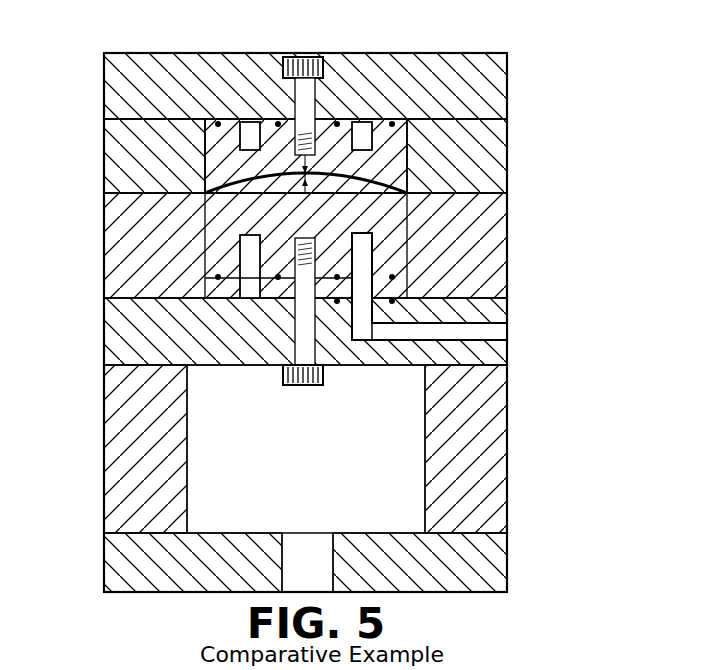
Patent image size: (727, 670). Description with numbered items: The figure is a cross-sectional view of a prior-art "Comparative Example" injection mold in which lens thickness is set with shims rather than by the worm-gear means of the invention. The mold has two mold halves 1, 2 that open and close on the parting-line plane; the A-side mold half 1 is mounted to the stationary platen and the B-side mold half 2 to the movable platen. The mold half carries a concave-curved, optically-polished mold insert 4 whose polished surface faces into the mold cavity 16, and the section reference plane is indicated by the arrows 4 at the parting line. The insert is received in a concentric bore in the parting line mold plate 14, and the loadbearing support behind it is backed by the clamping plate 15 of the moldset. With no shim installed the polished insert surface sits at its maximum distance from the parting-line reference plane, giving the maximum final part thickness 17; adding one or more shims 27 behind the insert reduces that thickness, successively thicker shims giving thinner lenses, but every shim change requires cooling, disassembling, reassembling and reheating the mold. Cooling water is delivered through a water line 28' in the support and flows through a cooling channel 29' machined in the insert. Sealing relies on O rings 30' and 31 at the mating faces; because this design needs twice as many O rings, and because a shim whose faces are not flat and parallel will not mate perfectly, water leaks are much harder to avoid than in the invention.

The mold half 1 is at (572, 143).
The mold half 2 is at (581, 248).
The mold insert 4 is at (342, 140).
The parting line mold plate 14 is at (473, 213).
The clamping plate 15 is at (478, 355).
The mold cavity 16 is at (232, 185).
The final part thickness 17 is at (228, 192).
The shim 27 is at (245, 292).
The water line 28' is at (460, 310).
The cooling channel 29' is at (460, 286).
The O ring 30' is at (133, 306).
The O ring 31 is at (392, 302).